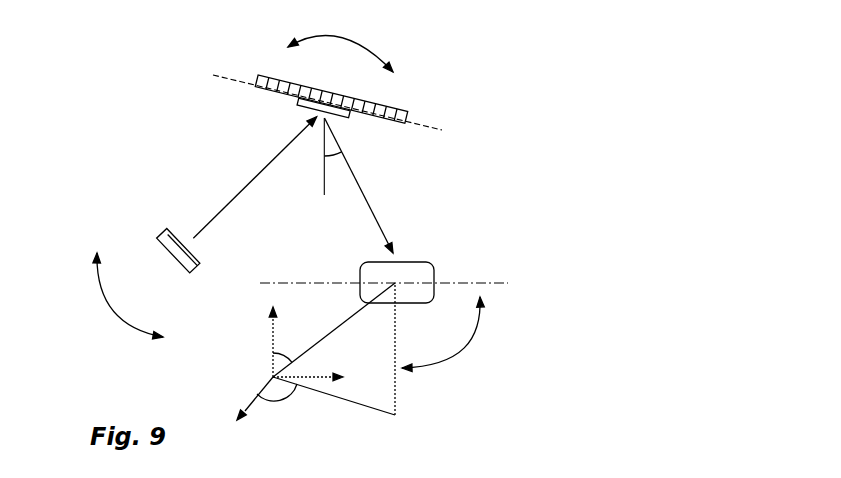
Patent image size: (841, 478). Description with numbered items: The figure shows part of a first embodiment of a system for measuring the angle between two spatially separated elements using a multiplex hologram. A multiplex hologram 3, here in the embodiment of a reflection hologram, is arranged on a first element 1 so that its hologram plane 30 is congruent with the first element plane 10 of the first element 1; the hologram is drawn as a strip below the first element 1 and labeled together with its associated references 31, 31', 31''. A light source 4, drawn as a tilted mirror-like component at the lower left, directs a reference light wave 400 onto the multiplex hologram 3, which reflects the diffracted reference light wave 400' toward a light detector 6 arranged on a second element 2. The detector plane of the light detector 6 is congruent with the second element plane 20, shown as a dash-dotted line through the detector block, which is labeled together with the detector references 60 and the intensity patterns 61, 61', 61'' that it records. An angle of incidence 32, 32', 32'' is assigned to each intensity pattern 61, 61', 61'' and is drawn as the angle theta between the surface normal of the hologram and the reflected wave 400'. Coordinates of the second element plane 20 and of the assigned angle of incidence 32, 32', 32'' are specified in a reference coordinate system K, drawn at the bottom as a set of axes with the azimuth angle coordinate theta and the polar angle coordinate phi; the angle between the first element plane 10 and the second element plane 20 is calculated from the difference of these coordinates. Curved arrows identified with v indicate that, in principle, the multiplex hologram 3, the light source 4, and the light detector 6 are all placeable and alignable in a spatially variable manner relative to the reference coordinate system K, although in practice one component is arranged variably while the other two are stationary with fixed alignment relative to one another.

The first element 1 is at (350, 95).
The multiplex hologram 3 is at (200, 110).
The scanning unit 31 is at (200, 110).
The scanning unit 31' is at (200, 110).
The scanning unit 31'' is at (200, 110).
The first element plane 10 is at (393, 105).
The hologram plane 30 is at (442, 135).
The angle of incidence 32 is at (432, 158).
The angle of incidence 32' is at (432, 158).
The angle of incidence 32'' is at (432, 158).
The incident light beam 400 is at (236, 178).
The diffracted reference light wave 400' is at (399, 185).
The second element 2 is at (537, 268).
The light detector 6 is at (537, 268).
The detector unit 60 is at (537, 268).
The intensity pattern 61 is at (537, 268).
The intensity pattern 61' is at (537, 268).
The intensity pattern 61'' is at (537, 268).
The second element plane 20 is at (508, 283).
The light source 4 is at (178, 262).
The reference coordinate system K is at (253, 371).
The curved arrow (variable) v is at (363, 35).